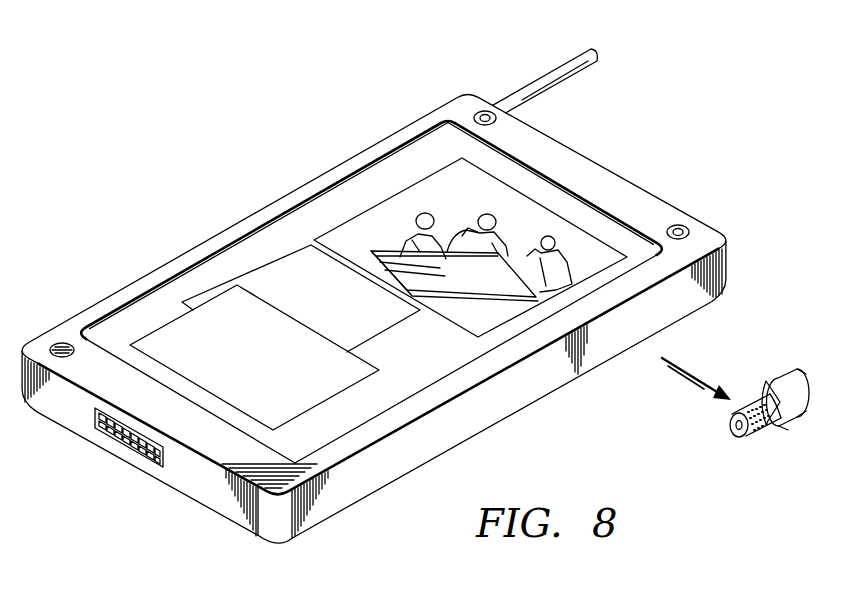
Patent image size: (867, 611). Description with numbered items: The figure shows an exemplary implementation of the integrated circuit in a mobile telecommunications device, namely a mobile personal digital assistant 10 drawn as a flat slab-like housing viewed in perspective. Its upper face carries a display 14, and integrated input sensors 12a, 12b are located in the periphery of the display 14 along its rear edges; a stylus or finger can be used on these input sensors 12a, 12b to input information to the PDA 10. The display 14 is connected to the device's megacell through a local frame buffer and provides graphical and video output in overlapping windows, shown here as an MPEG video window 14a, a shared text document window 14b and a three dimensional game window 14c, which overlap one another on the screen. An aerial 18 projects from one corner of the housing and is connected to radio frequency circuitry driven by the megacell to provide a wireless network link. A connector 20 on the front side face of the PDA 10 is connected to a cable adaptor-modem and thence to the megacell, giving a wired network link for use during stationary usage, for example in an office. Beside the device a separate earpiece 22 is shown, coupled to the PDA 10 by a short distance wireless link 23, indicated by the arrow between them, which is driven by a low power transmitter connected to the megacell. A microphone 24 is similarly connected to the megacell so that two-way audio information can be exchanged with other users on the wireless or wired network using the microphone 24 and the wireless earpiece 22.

The mobile personal digital assistant 10 is at (371, 284).
The integrated input sensor 12a is at (323, 193).
The integrated input sensor 12b is at (580, 198).
The display 14 is at (359, 278).
The MPEG video window 14a is at (423, 195).
The shared text document window 14b is at (280, 250).
The three dimensional game window 14c is at (177, 327).
The aerial 18 is at (547, 77).
The connector 20 is at (106, 432).
The earpiece 22 is at (798, 385).
The short distance wireless link 23 is at (717, 363).
The microphone 24 is at (52, 346).